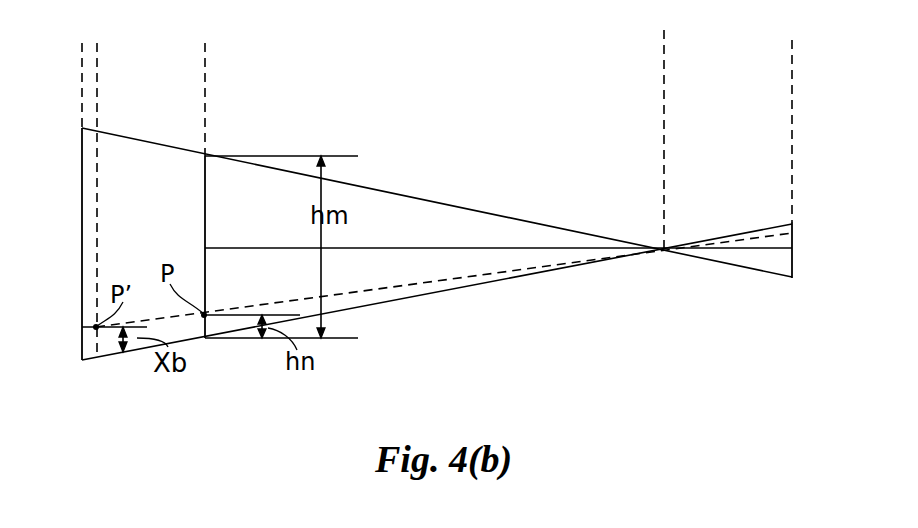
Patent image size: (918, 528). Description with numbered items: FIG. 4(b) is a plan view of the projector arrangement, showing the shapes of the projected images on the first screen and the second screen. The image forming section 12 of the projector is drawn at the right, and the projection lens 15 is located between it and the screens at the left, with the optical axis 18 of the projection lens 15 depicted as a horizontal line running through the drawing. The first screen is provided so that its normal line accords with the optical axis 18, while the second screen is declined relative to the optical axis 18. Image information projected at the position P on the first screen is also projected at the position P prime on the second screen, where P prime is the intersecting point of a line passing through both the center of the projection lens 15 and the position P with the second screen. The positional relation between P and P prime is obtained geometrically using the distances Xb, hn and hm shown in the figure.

The image forming section 12 is at (793, 260).
The projection lens 15 is at (664, 251).
The optical axis 18 is at (405, 247).